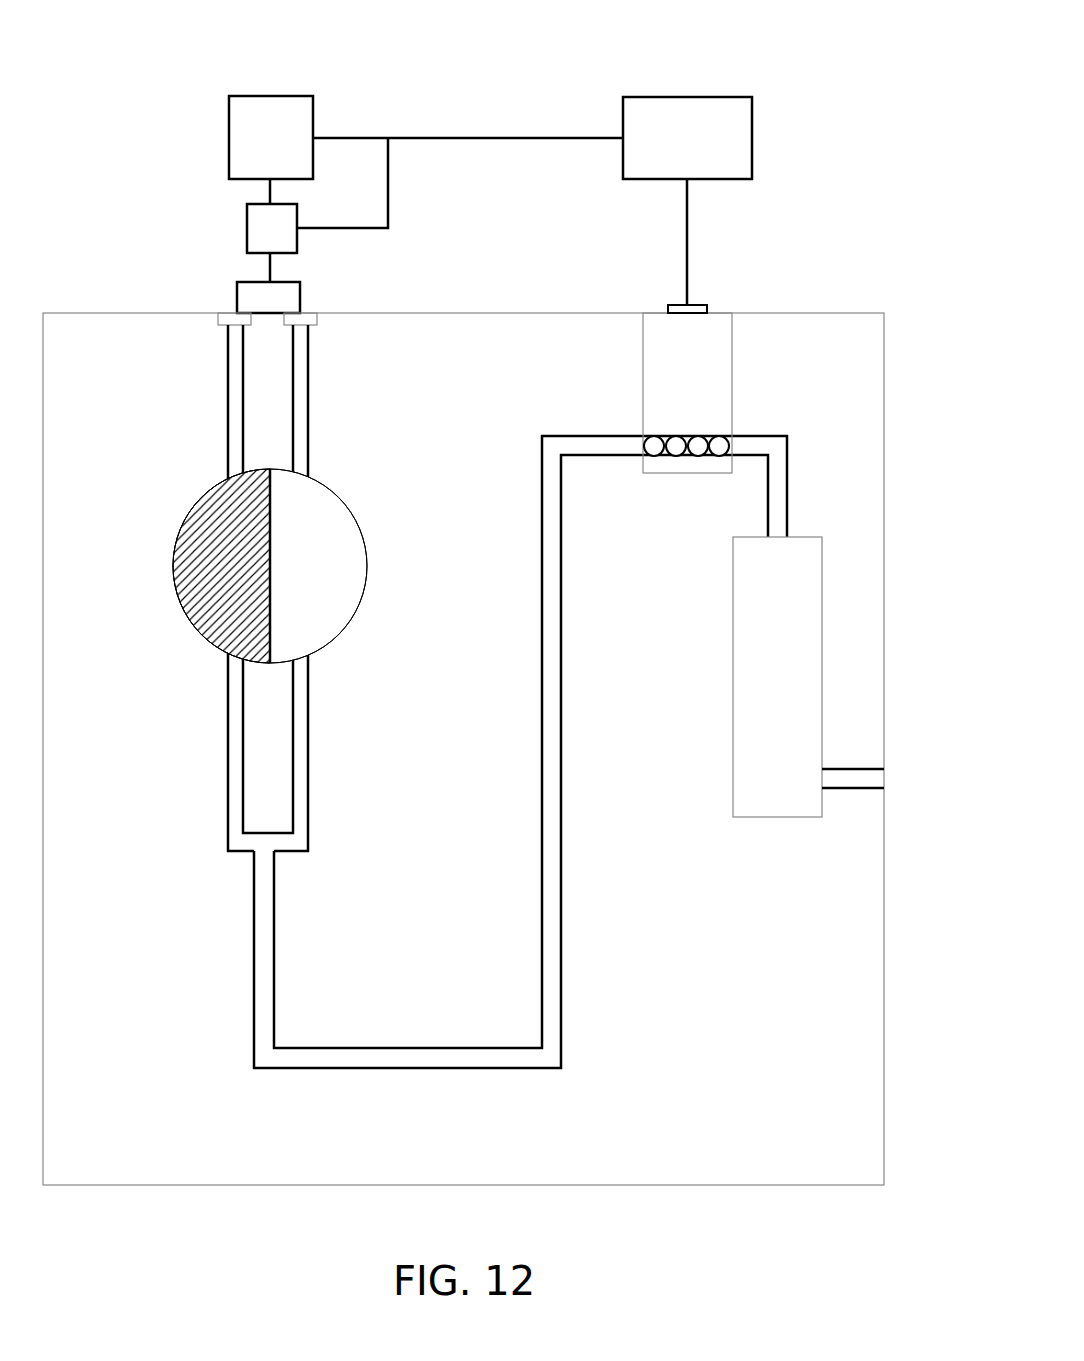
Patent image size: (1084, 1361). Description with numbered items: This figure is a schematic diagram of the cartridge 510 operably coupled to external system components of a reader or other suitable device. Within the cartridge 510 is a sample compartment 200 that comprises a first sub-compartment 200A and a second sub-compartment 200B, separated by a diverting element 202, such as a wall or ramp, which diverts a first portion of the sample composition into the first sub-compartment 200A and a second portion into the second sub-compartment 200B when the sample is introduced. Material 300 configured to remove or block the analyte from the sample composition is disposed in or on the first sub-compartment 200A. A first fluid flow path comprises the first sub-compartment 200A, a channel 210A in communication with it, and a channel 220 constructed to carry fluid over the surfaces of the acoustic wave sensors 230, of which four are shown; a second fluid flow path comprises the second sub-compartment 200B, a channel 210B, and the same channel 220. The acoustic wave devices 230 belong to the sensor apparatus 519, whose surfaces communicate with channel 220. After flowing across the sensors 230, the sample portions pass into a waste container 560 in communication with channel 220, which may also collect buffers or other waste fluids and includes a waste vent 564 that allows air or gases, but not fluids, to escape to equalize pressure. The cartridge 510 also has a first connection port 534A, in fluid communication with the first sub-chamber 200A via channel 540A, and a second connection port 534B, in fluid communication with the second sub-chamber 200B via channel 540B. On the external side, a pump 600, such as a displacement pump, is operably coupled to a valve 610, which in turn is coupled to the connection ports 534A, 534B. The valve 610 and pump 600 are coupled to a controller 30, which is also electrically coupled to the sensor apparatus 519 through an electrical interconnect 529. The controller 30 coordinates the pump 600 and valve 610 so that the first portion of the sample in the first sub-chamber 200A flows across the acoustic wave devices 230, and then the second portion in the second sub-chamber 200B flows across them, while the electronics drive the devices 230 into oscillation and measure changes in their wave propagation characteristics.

The controller 30 is at (687, 97).
The sample compartment 200 is at (337, 492).
The first sub-compartment 200A is at (177, 592).
The second sub-compartment 200B is at (363, 593).
The diverting element 202 is at (270, 594).
The channel 210A is at (228, 735).
The channel 210B is at (308, 762).
The channel 220 is at (255, 913).
The acoustic wave sensors 230 is at (664, 463).
The material 300 is at (205, 532).
The cartridge 510 is at (873, 275).
The sensor apparatus 519 is at (732, 373).
The electrical interconnect 529 is at (705, 304).
The first connection port 534A is at (225, 312).
The second connection port 534B is at (313, 312).
The channel 540A is at (230, 340).
The channel 540B is at (308, 340).
The waste container 560 is at (733, 775).
The waste vent 564 is at (852, 789).
The pump 600 is at (270, 96).
The valve 610 is at (246, 223).